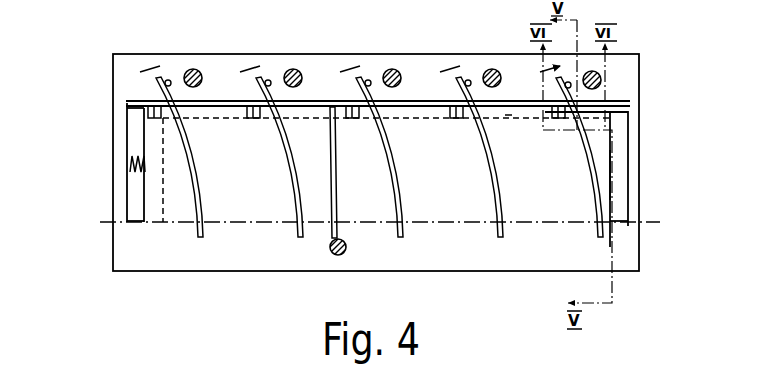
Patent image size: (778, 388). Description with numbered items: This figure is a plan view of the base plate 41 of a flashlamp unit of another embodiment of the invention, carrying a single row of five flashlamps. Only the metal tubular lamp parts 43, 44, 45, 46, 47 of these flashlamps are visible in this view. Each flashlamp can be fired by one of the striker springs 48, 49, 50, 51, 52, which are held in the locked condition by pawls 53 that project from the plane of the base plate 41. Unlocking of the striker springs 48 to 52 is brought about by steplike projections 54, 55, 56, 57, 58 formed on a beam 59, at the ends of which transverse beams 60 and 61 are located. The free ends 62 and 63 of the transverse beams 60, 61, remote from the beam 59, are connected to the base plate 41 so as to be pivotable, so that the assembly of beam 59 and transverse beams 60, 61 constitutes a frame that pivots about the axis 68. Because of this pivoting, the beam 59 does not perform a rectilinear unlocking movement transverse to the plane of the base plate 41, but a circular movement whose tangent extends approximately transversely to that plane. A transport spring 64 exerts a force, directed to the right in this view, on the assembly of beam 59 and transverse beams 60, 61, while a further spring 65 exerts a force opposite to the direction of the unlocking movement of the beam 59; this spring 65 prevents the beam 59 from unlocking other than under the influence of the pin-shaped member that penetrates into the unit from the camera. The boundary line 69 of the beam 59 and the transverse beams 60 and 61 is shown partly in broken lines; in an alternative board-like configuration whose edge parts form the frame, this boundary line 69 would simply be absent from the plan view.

The base plate 41 is at (624, 93).
The metal tubular lamp part 43 is at (601, 80).
The metal tubular lamp part 44 is at (492, 68).
The metal tubular lamp part 45 is at (392, 68).
The metal tubular lamp part 46 is at (293, 68).
The metal tubular lamp part 47 is at (194, 68).
The striker spring 48 is at (594, 181).
The striker spring 49 is at (494, 179).
The striker spring 50 is at (397, 179).
The striker spring 51 is at (295, 178).
The striker spring 52 is at (198, 183).
The pawl 53 is at (168, 80).
The steplike projection 54 is at (568, 116).
The steplike projection 55 is at (452, 109).
The steplike projection 56 is at (348, 109).
The steplike projection 57 is at (248, 109).
The steplike projection 58 is at (150, 110).
The beam 59 is at (510, 116).
The transverse beam 60 is at (152, 183).
The transverse beam 61 is at (620, 183).
The free end 62 is at (155, 221).
The free end 63 is at (620, 226).
The transport spring 64 is at (131, 153).
The spring 65 is at (335, 204).
The axis 68 is at (104, 222).
The boundary line 69 is at (220, 119).